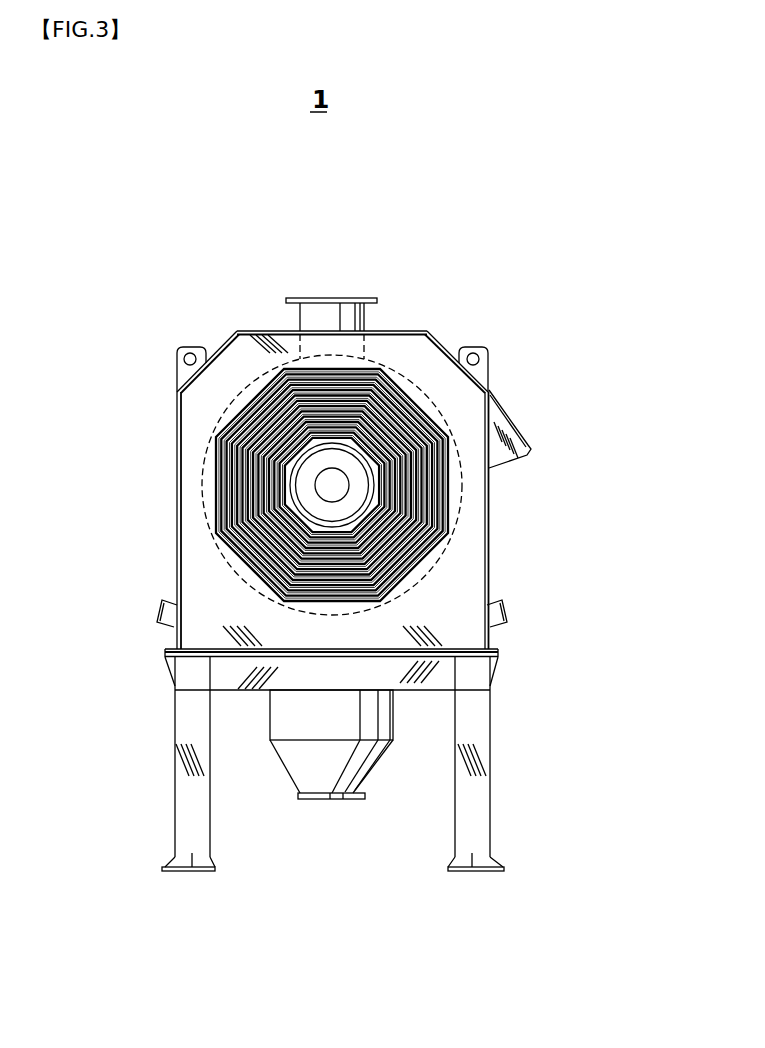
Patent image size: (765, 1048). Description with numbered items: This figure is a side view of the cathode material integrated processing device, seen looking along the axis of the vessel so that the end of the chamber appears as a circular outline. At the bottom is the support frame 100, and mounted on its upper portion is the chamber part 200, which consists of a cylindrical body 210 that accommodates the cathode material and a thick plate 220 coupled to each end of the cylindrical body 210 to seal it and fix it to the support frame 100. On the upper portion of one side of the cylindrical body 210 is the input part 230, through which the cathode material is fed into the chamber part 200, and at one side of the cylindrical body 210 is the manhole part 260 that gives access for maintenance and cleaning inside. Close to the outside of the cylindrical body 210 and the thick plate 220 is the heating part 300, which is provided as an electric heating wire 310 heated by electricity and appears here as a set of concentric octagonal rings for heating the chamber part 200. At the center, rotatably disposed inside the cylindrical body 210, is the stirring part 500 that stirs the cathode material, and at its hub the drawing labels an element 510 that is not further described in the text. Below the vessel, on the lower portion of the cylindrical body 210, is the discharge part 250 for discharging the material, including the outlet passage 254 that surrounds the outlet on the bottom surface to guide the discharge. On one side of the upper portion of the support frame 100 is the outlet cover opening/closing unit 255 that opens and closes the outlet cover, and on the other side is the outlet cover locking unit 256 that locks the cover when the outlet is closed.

The support frame 100 is at (504, 768).
The chamber part 200 is at (505, 236).
The cylindrical body 210 is at (420, 393).
The thick plate 220 is at (403, 340).
The input part 230 is at (332, 298).
The discharge part 250 is at (334, 812).
The outlet passage 254 is at (277, 712).
The outlet cover opening/closing unit 255 is at (163, 605).
The outlet cover locking unit 256 is at (505, 603).
The manhole part 260 is at (512, 418).
The heating part 300 is at (231, 411).
The electric heating wire 310 is at (240, 515).
The stirring part 500 is at (360, 503).
The shaft 510 is at (338, 483).